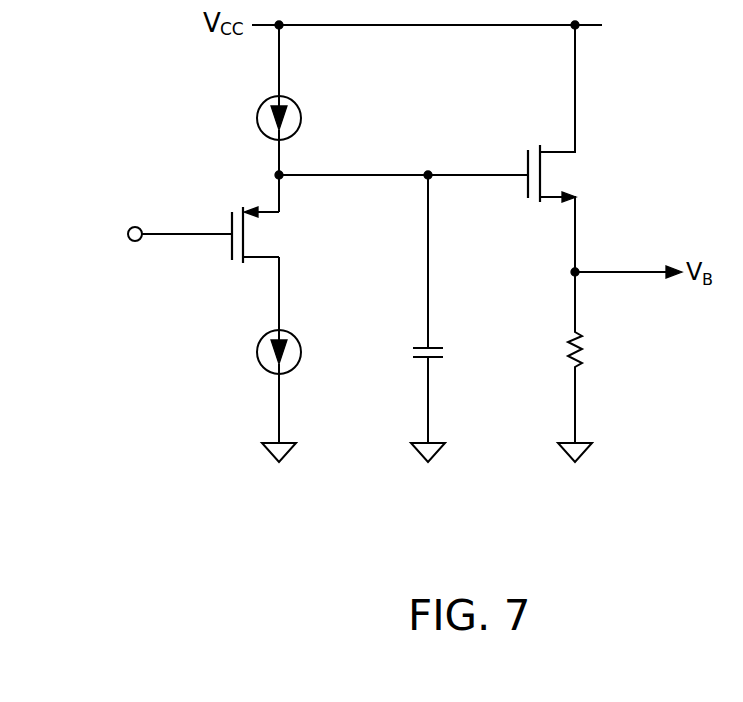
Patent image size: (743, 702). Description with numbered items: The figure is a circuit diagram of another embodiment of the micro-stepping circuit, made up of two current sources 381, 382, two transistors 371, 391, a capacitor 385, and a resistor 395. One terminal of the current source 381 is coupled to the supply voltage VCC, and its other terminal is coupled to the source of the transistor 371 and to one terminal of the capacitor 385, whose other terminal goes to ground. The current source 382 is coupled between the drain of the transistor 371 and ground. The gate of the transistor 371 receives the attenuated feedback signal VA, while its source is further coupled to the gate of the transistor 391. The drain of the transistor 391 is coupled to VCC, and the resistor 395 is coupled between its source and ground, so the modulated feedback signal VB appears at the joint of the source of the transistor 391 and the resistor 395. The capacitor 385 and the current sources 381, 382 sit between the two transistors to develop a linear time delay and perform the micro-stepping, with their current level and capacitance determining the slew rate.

The current source 381 is at (307, 118).
The transistor 371 is at (215, 235).
The current source 382 is at (308, 359).
The capacitor 385 is at (457, 318).
The transistor 391 is at (583, 148).
The resistor 395 is at (602, 367).